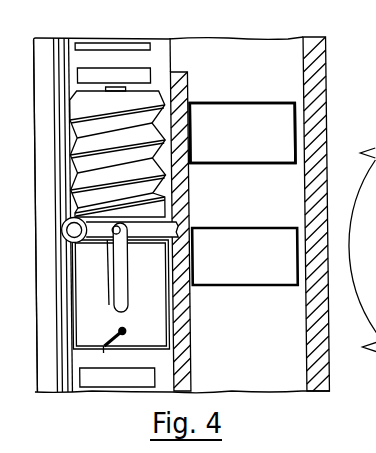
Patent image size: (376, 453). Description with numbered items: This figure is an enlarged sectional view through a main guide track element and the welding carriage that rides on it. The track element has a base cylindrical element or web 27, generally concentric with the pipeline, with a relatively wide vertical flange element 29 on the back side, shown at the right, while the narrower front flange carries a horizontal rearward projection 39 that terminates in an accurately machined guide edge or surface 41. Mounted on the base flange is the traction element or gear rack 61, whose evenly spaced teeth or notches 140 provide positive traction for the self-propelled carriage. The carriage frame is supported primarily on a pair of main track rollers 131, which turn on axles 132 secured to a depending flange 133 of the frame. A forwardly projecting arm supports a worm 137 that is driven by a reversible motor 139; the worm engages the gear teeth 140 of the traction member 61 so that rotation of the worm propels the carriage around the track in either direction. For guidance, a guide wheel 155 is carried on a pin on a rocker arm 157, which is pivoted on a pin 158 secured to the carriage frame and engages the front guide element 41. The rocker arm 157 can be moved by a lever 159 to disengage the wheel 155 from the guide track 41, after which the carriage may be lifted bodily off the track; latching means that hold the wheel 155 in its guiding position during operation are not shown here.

The base cylindrical element or web 27 is at (200, 202).
The vertical flange element 29 is at (328, 81).
The horizontal rearward projection 39 is at (34, 132).
The guide edge or surface 41 is at (59, 61).
The traction element or gear rack 61 is at (154, 74).
The main track rollers 131 is at (241, 164).
The axles 132 is at (194, 143).
The depending flange 133 is at (188, 206).
The worm 137 is at (158, 99).
The motor 139 is at (143, 346).
The gear teeth or notches 140 is at (153, 47).
The guide wheel 155 is at (75, 243).
The rocker arm 157 is at (107, 278).
The pin 158 is at (120, 233).
The lever 159 is at (133, 249).